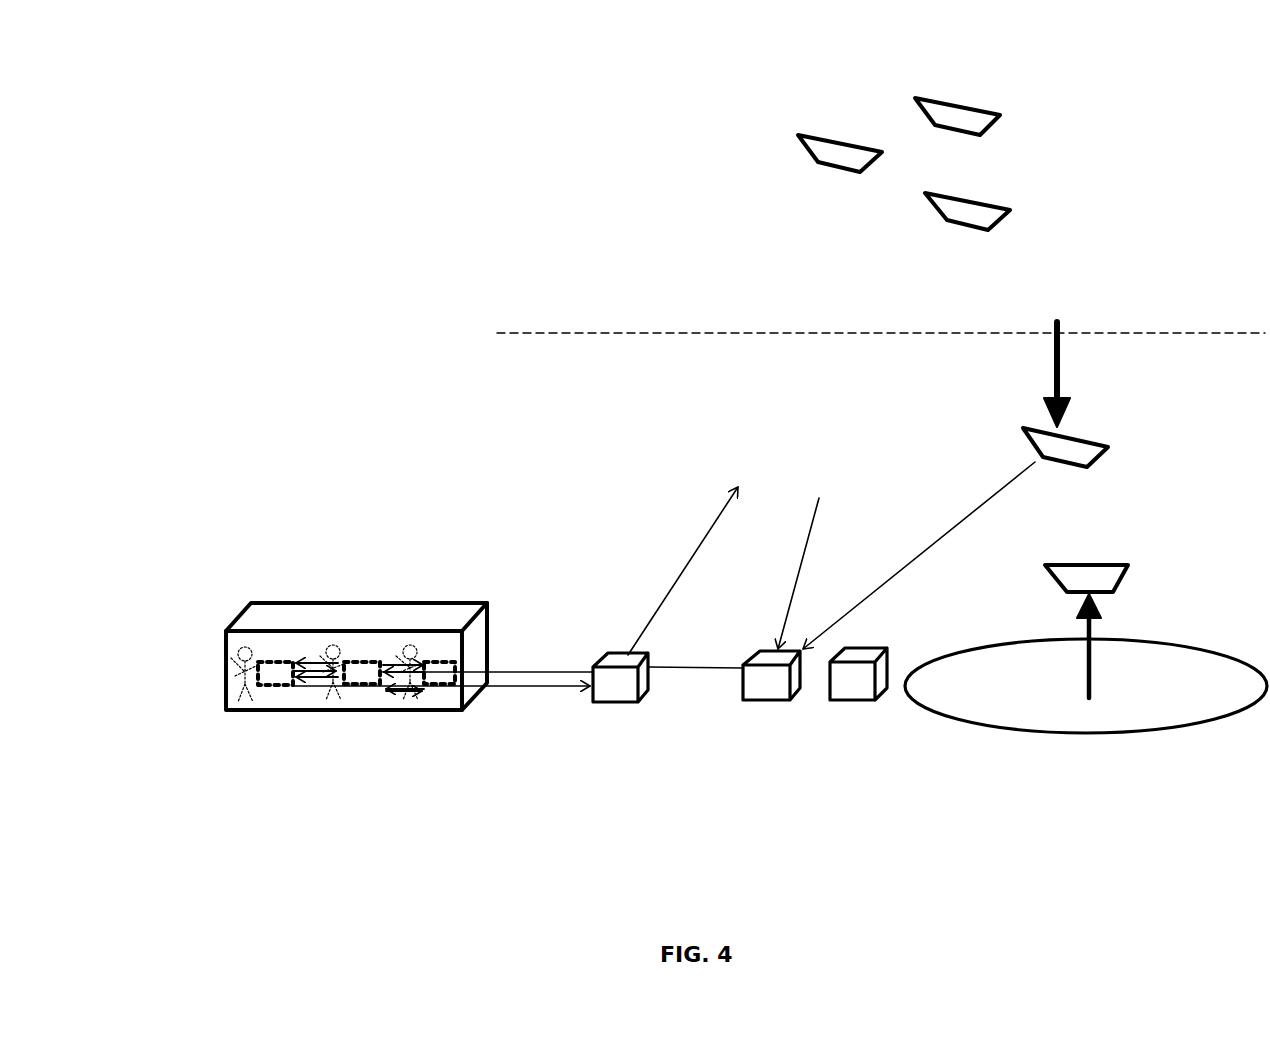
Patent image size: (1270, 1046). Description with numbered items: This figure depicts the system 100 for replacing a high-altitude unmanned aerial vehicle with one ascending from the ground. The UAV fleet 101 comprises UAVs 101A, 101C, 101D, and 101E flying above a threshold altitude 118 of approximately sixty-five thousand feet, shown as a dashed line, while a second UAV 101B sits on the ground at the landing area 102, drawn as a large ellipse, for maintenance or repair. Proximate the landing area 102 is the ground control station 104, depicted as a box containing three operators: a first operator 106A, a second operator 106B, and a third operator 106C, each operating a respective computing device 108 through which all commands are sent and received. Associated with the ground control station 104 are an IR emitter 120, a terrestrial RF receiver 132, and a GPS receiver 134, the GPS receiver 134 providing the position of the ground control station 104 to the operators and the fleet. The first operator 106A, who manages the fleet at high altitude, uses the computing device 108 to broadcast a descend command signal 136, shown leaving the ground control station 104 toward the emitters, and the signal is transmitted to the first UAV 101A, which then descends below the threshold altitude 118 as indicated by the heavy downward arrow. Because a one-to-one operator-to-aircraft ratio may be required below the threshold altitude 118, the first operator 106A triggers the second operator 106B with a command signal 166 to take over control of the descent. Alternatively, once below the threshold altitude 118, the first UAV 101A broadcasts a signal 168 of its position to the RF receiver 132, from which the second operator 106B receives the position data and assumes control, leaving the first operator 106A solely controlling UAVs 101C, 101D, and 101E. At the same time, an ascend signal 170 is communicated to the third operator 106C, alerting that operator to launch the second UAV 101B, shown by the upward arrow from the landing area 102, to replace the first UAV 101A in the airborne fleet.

The system 100 is at (306, 146).
The UAV fleet 101 is at (764, 147).
The first UAV 101A is at (1078, 439).
The second UAV 101B is at (1102, 566).
The UAV 101C is at (968, 232).
The UAV 101D is at (819, 135).
The UAV 101E is at (982, 101).
The landing area 102 is at (1143, 736).
The ground control station 104 is at (240, 620).
The first operator 106A is at (226, 676).
The second operator 106B is at (326, 642).
The third operator 106C is at (436, 632).
The computing device 108 is at (265, 702).
The threshold altitude 118 is at (541, 335).
The IR emitter 120 is at (625, 704).
The terrestrial RF receiver 132 is at (765, 704).
The GPS receiver 134 is at (843, 704).
The descend command signal 136 is at (498, 692).
The command signal 166 is at (305, 696).
The position signal 168 is at (940, 540).
The ascend signal 170 is at (400, 656).